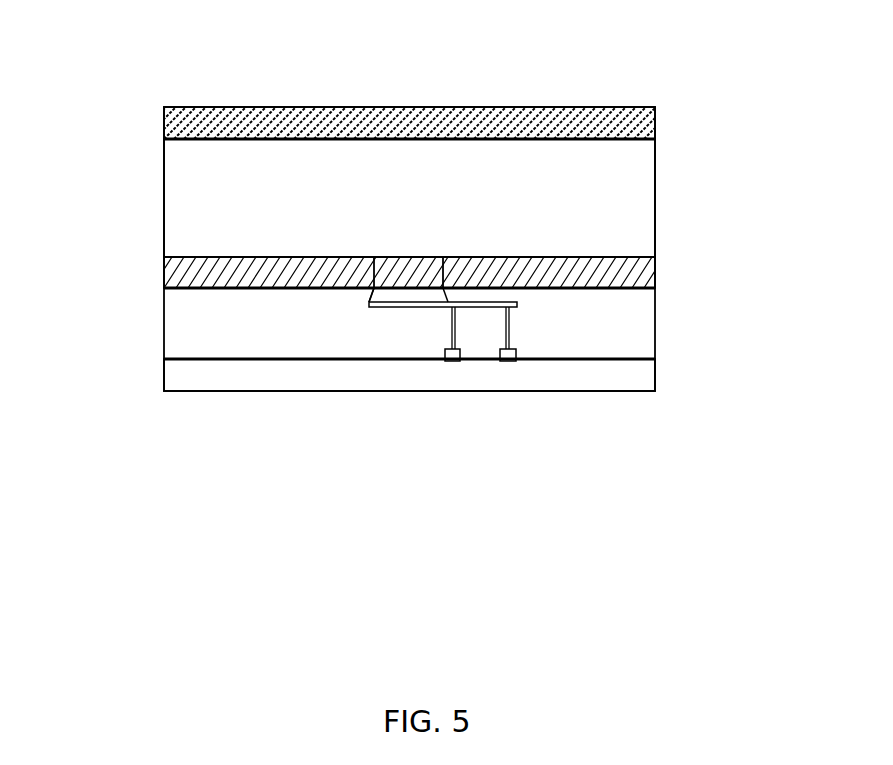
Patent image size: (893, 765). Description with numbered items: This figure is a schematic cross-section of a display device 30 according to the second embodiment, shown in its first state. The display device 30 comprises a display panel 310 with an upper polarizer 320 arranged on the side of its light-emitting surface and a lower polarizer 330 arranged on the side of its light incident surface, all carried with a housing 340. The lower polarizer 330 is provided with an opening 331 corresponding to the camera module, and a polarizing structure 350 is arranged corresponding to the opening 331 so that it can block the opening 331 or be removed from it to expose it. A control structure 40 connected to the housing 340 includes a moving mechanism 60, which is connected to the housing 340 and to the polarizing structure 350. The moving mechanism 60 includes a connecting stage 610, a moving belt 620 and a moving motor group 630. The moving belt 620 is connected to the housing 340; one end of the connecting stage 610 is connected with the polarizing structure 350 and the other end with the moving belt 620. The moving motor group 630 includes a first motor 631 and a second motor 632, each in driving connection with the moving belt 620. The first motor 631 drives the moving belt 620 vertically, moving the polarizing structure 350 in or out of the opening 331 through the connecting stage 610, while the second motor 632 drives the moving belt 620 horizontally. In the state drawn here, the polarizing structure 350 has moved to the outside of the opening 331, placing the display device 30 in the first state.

The display device 30 is at (144, 48).
The display panel 310 is at (620, 205).
The upper polarizer 320 is at (617, 123).
The lower polarizer 330 is at (620, 271).
The opening 331 is at (372, 290).
The housing 340 is at (613, 382).
The polarizing structure 350 is at (400, 260).
The control structure 40 is at (501, 433).
The moving mechanism 60 is at (501, 433).
The connecting stage 610 is at (447, 295).
The moving belt 620 is at (517, 307).
The moving motor group 630 is at (498, 410).
The first motor 631 is at (454, 361).
The second motor 632 is at (517, 361).